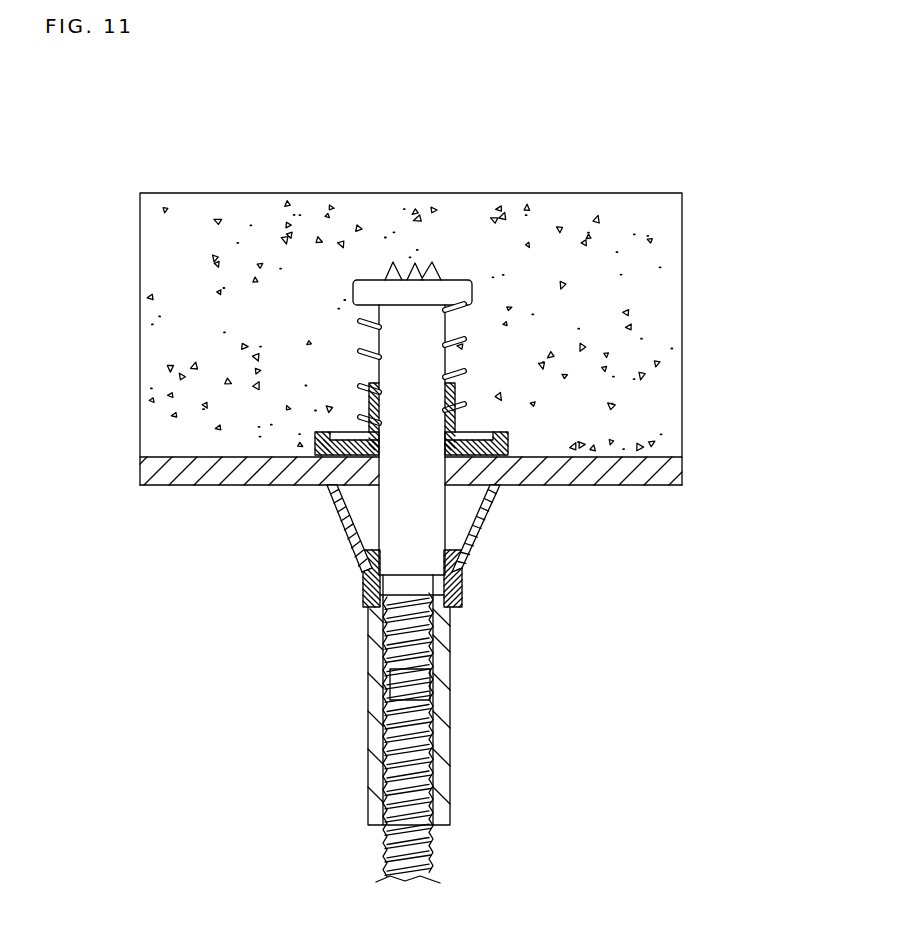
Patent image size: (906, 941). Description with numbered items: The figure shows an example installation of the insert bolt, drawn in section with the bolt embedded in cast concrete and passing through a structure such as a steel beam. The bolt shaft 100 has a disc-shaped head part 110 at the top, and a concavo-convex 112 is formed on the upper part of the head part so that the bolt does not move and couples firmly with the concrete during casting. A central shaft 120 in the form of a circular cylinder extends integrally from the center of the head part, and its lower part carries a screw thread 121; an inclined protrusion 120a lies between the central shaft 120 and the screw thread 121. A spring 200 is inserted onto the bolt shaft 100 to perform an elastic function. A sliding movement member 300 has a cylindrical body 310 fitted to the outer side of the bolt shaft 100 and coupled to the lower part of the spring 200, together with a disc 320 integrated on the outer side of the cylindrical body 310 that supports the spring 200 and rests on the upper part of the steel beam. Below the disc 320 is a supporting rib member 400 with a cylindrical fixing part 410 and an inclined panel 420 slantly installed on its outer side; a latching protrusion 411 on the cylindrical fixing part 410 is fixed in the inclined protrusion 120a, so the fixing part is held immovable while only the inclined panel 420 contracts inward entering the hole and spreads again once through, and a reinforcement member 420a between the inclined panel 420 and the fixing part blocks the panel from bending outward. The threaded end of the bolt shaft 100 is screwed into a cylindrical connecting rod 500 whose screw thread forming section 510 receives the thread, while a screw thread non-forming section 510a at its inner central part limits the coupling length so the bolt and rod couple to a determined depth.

The bolt shaft 100 is at (414, 520).
The disc-shaped head part 110 is at (353, 300).
The concavo-convex 112 is at (418, 262).
The central shaft 120 is at (379, 378).
The inclined protrusion 120a is at (460, 598).
The screw thread 121 is at (436, 650).
The spring 200 is at (447, 347).
The sliding movement member 300 is at (405, 475).
The cylindrical body 310 is at (345, 467).
The disc 320 is at (313, 445).
The supporting rib member 400 is at (386, 581).
The cylindrical fixing part 410 is at (463, 605).
The latching protrusion 411 is at (364, 608).
The inclined panel 420 is at (465, 548).
The reinforcement member 420a is at (363, 576).
The connecting rod 500 is at (422, 710).
The screw thread forming section 510 is at (386, 697).
The screw thread non-forming section 510a is at (432, 690).